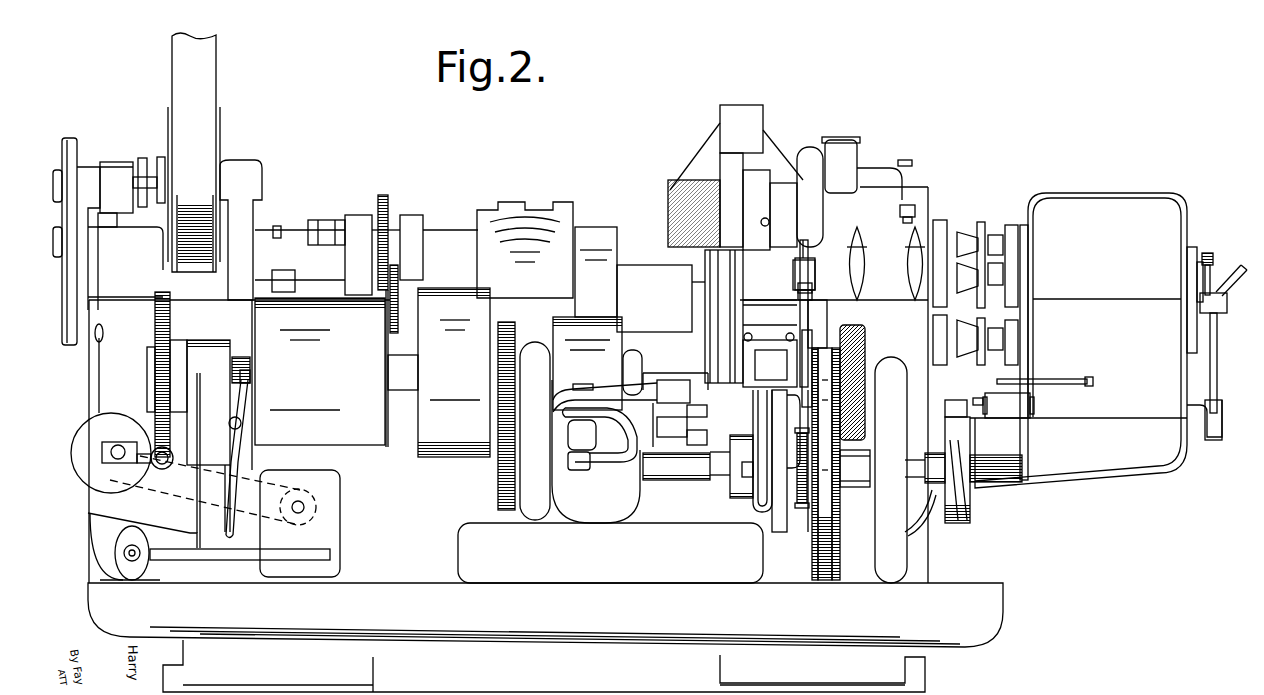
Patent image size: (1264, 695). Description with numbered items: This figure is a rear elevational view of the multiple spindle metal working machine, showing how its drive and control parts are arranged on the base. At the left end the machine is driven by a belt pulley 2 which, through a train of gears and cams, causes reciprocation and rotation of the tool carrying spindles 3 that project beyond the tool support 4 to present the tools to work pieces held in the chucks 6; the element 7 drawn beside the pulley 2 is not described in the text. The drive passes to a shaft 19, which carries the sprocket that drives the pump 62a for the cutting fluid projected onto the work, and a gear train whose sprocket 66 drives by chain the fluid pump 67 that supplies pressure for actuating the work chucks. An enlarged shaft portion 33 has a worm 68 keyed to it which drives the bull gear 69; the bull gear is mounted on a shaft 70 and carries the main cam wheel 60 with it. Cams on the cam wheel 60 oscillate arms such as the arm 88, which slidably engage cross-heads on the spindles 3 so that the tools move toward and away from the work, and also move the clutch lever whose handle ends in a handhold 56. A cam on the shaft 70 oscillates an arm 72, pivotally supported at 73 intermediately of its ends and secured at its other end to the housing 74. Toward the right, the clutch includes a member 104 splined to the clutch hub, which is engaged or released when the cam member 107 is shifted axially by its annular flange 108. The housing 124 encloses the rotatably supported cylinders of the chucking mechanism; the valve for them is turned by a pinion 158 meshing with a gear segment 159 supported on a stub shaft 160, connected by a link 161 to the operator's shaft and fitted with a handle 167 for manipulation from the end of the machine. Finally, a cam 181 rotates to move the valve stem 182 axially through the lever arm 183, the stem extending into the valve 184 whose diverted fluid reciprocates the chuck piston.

The belt pulley 2 is at (178, 127).
The shaft 7 is at (137, 173).
The tool carrying spindles 3 is at (300, 262).
The arms 88 is at (310, 268).
The tool support 4 is at (601, 243).
The chucks 6 is at (717, 293).
The main cam wheel 60 is at (872, 548).
The bull gear 69 is at (158, 318).
The shaft 70 is at (248, 362).
The arm 72 is at (250, 403).
The pivot 73 is at (242, 423).
The housing 74 is at (238, 460).
The handhold 56 is at (93, 340).
The shaft 19 is at (108, 448).
The enlarged portion 33 is at (170, 455).
The sprocket 66 is at (88, 470).
The worm 68 is at (158, 470).
The fluid pump 67 is at (333, 497).
The pump 62a is at (113, 553).
The member 104 is at (945, 267).
The cam member 107 is at (968, 283).
The annular flange 108 is at (977, 323).
The housing 124 is at (1163, 203).
The pinion 158 is at (1209, 253).
The gear segment 159 is at (1218, 283).
The handle 167 is at (1238, 278).
The stub shaft 160 is at (1225, 305).
The link 161 is at (1217, 368).
The cam 181 is at (957, 508).
The valve stem 182 is at (978, 408).
The lever arm 183 is at (958, 393).
The valve 184 is at (1010, 410).